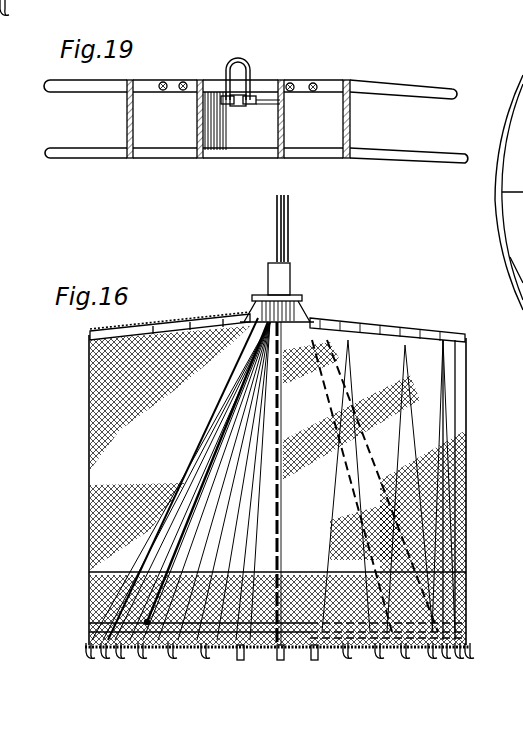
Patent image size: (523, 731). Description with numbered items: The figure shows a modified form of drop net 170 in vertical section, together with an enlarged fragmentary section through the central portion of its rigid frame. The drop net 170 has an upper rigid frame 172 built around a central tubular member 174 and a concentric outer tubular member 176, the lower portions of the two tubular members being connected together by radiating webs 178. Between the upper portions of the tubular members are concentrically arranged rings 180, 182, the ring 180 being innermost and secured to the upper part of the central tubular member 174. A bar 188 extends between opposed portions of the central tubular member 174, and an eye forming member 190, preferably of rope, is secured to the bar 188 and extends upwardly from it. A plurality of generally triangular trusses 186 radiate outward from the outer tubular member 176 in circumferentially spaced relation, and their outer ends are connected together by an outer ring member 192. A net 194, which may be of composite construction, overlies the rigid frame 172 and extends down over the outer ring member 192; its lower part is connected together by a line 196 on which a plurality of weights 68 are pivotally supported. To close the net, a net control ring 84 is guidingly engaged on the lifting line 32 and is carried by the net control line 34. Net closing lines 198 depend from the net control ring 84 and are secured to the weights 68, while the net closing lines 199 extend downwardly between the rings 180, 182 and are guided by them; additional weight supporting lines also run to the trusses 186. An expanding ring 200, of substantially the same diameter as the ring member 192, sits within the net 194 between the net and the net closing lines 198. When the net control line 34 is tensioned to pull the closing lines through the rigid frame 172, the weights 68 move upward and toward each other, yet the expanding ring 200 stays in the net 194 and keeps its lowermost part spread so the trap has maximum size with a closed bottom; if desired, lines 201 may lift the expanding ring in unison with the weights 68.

In FIG. 16, the lifting line 32 is at (272, 236).
In FIG. 16, the net control line 34 is at (289, 240).
In FIG. 16, the net control ring 84 is at (302, 268).
In FIG. 16, the weights 68 is at (321, 667).
In FIG. 16, the drop net 170 is at (393, 318).
In FIG. 16, the upper rigid frame 172 is at (326, 316).
In FIG. 19, the central tubular member 174 is at (209, 139).
In FIG. 19, the outer tubular member 176 is at (136, 94).
In FIG. 19, the radiating webs 178 is at (176, 153).
In FIG. 19, the ring 180 is at (291, 82).
In FIG. 19, the ring 182 is at (318, 82).
In FIG. 16, the triangular trusses 186 is at (212, 326).
In FIG. 19, the bar 188 is at (236, 106).
In FIG. 19, the eye forming member 190 is at (226, 66).
In FIG. 16, the outer ring member 192 is at (90, 336).
In FIG. 16, the net 194 is at (467, 440).
In FIG. 16, the line 196 is at (226, 652).
In FIG. 16, the net closing lines 198 is at (200, 428).
In FIG. 16, the net closing lines 199 is at (88, 452).
In FIG. 16, the expanding ring 200 is at (467, 633).
In FIG. 16, the lines 201 is at (226, 348).